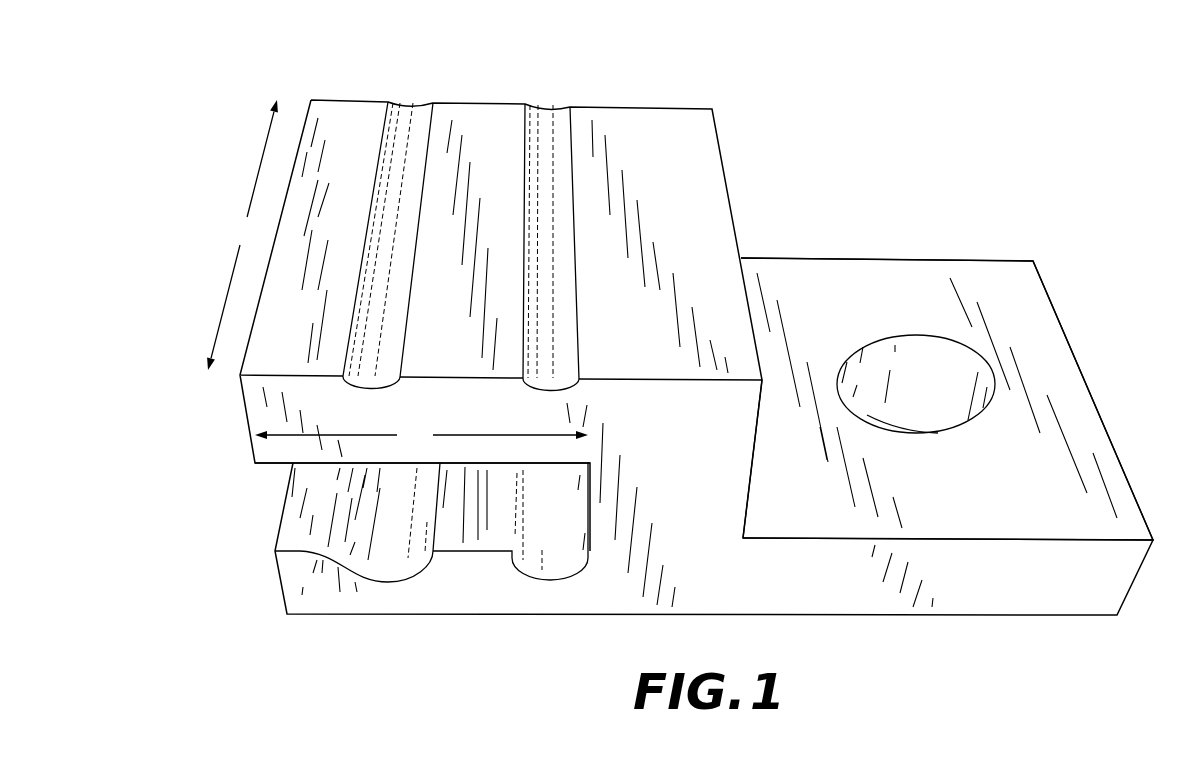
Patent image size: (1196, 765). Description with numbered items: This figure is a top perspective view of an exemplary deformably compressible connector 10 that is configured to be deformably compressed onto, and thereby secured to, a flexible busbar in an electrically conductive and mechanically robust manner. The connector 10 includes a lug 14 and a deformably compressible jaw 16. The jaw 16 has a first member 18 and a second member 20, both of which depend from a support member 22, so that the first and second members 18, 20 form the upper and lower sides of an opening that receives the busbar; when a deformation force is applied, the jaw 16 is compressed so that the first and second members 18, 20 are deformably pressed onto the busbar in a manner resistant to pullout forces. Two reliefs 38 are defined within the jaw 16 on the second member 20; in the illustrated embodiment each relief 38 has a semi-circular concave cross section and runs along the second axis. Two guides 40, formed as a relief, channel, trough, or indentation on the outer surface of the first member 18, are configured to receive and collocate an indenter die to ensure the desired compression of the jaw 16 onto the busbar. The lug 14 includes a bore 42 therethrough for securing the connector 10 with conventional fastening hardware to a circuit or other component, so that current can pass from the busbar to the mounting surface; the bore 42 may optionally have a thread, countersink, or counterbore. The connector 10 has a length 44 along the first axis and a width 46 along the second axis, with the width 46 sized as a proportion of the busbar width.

The deformably compressible connector 10 is at (855, 98).
The lug 14 is at (1063, 377).
The deformably compressible jaw 16 is at (665, 83).
The first member 18 is at (260, 418).
The second member 20 is at (303, 585).
The support member 22 is at (715, 453).
The reliefs 38 is at (552, 572).
The guides 40 is at (420, 133).
The bore 42 is at (910, 333).
The length 44 is at (421, 435).
The width 46 is at (242, 235).